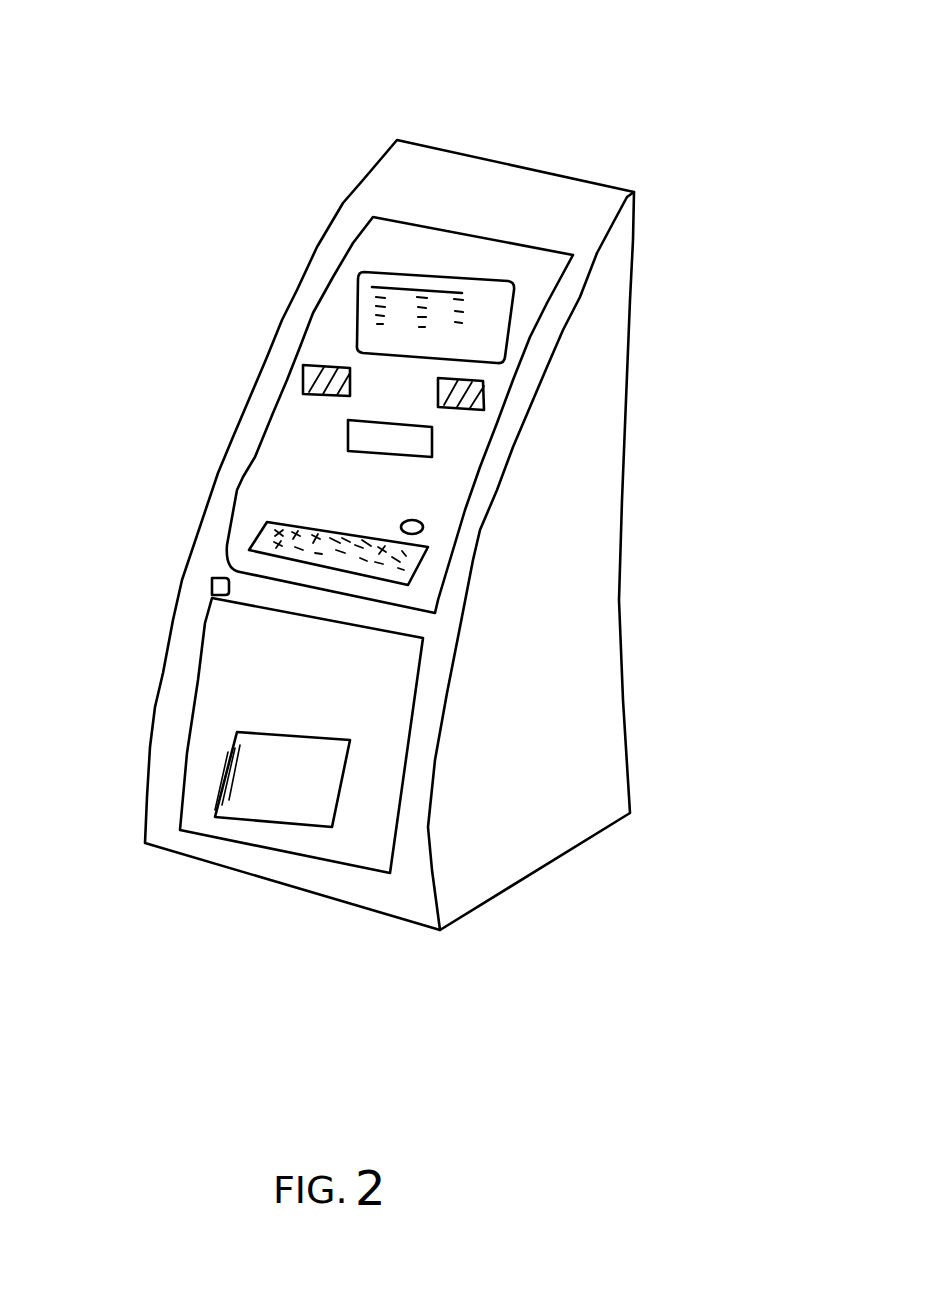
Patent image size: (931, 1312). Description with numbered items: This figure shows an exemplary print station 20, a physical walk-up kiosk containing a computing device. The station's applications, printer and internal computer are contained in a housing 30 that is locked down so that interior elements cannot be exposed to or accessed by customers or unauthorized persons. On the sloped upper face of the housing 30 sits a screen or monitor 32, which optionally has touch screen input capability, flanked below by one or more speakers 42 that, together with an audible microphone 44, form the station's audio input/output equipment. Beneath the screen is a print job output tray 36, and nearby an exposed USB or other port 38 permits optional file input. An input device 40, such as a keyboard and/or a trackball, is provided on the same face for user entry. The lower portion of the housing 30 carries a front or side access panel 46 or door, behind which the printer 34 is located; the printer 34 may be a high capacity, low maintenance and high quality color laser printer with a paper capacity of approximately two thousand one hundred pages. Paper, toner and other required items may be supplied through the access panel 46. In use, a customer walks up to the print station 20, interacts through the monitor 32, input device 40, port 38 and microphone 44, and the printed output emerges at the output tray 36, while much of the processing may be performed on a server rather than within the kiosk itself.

The print station 20 is at (793, 99).
The housing 30 is at (343, 187).
The screen or monitor 32 is at (360, 318).
The printer 34 is at (278, 797).
The print job output tray 36 is at (333, 437).
The exposed USB or other port 38 is at (203, 587).
The input device 40 is at (243, 535).
The speakers 42 is at (297, 387).
The audible microphone 44 is at (425, 522).
The front or side access panel 46 is at (213, 693).